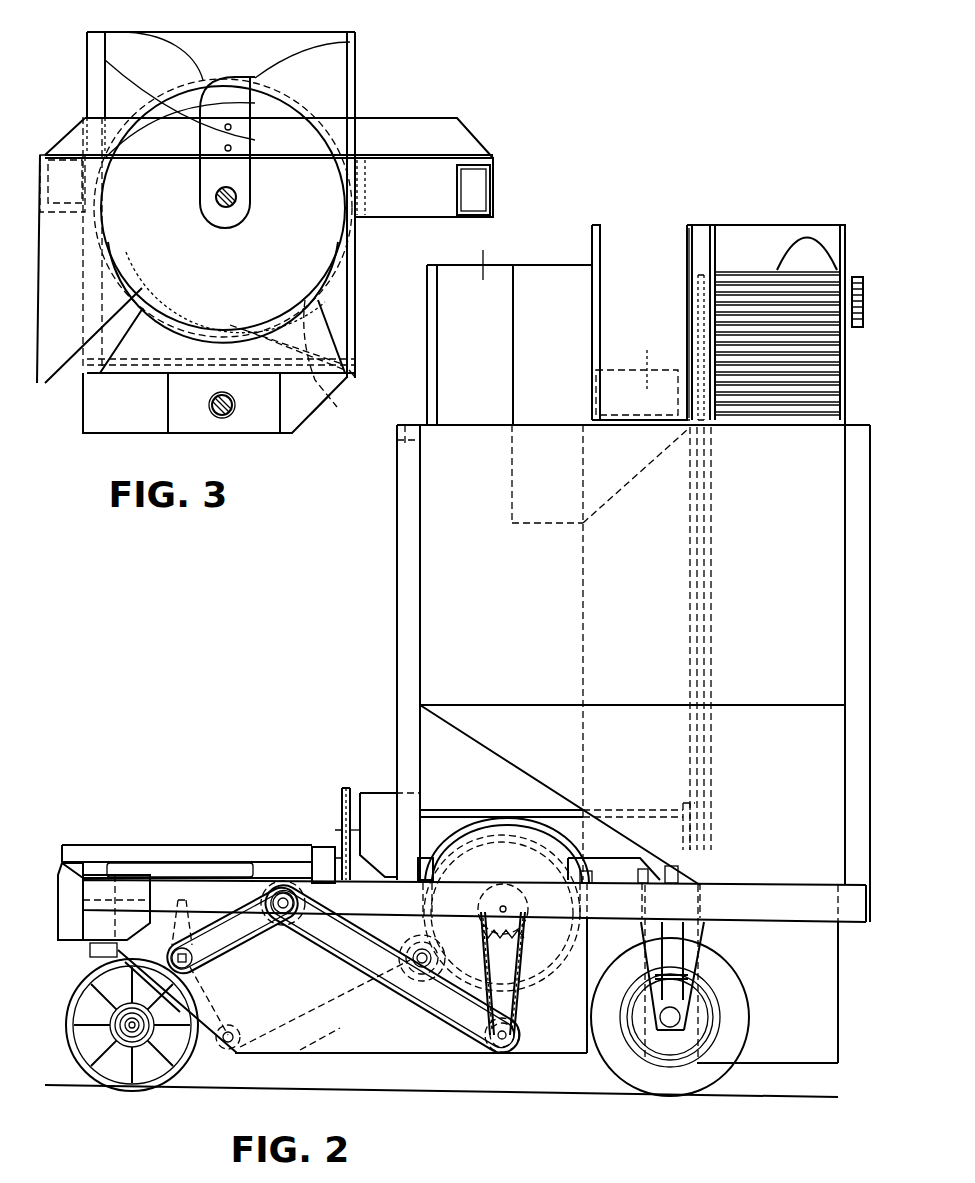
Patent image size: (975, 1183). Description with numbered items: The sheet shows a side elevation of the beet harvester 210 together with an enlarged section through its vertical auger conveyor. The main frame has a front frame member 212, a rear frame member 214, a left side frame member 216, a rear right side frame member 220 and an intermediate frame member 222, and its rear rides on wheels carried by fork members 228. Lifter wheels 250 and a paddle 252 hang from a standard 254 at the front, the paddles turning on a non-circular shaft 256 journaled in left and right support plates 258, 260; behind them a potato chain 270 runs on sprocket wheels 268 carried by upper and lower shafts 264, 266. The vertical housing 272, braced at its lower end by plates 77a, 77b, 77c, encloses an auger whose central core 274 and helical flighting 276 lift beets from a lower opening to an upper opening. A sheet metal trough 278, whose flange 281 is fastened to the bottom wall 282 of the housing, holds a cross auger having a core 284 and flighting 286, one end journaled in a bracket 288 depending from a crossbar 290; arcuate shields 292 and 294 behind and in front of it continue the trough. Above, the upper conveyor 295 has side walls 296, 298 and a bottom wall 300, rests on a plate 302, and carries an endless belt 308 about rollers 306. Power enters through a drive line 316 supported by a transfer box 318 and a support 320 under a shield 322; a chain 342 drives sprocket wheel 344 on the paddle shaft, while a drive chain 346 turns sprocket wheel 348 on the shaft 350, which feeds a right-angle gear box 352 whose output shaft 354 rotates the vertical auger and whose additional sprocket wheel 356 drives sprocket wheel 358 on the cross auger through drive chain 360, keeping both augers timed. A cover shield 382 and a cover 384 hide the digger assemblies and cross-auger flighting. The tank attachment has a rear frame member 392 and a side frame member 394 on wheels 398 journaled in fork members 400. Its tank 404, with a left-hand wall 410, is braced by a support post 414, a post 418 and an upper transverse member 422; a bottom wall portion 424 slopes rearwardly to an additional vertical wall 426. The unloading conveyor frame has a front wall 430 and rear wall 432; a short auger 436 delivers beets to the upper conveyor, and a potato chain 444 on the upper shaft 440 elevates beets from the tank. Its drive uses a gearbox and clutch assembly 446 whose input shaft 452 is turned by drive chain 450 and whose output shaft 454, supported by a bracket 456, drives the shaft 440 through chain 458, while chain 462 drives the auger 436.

In FIG. 3, the plate 77a is at (82, 420).
In FIG. 3, the plate 77b is at (313, 416).
In FIG. 3, the plate 77c is at (355, 358).
In FIG. 2, the beet harvester 210 is at (314, 735).
In FIG. 2, the front frame member 212 is at (80, 946).
In FIG. 3, the rear frame member 214 is at (495, 179).
In FIG. 2, the left side frame member 216 is at (465, 896).
In FIG. 3, the rear right side frame member 220 is at (418, 200).
In FIG. 3, the intermediate frame member 222 is at (47, 177).
In FIG. 2, the fork members 228 is at (662, 931).
In FIG. 2, the lifter wheels 250 is at (72, 1051).
In FIG. 2, the paddle 252 is at (186, 901).
In FIG. 2, the standard 254 is at (95, 956).
In FIG. 2, the non-circular shaft 256 is at (192, 966).
In FIG. 2, the left side support plate 258 is at (385, 1051).
In FIG. 3, the right side support plate 260 is at (55, 378).
In FIG. 2, the upper shaft 264 is at (418, 953).
In FIG. 2, the lower shaft 266 is at (230, 1035).
In FIG. 2, the sprocket wheels 268 is at (235, 1053).
In FIG. 2, the chain 270 is at (358, 1007).
In FIG. 3, the vertical housing 272 is at (357, 78).
In FIG. 2, the vertical housing 272 is at (483, 272).
In FIG. 3, the central core 274 is at (203, 228).
In FIG. 3, the helical flighting 276 is at (300, 230).
In FIG. 3, the sheet metal trough 278 is at (315, 290).
In FIG. 2, the sheet metal trough 278 is at (540, 976).
In FIG. 3, the downwardly depending flange 281 is at (137, 354).
In FIG. 3, the bottom wall 282 is at (325, 390).
In FIG. 3, the core 284 is at (216, 196).
In FIG. 3, the helical flighting 286 is at (148, 110).
In FIG. 2, the helical flighting 286 is at (530, 848).
In FIG. 3, the bracket 288 is at (250, 214).
In FIG. 3, the crossbar 290 is at (420, 140).
In FIG. 2, the crossbar 290 is at (622, 871).
In FIG. 3, the arcuate shield 292 is at (342, 272).
In FIG. 2, the arcuate shield 292 is at (580, 921).
In FIG. 3, the arcuate shield 294 is at (118, 256).
In FIG. 2, the arcuate shield 294 is at (332, 916).
In FIG. 2, the upper conveyor 295 is at (592, 199).
In FIG. 2, the side wall 296 is at (599, 232).
In FIG. 2, the side wall 298 is at (687, 259).
In FIG. 2, the bottom wall 300 is at (640, 423).
In FIG. 2, the plate 302 is at (520, 358).
In FIG. 2, the rollers 306 is at (650, 385).
In FIG. 2, the endless belt 308 is at (612, 368).
In FIG. 2, the drive line 316 is at (340, 836).
In FIG. 2, the transfer box 318 is at (316, 856).
In FIG. 2, the support 320 is at (62, 871).
In FIG. 2, the shield 322 is at (198, 850).
In FIG. 2, the chain 342 is at (250, 941).
In FIG. 2, the sprocket wheel 344 is at (205, 954).
In FIG. 2, the drive chain 346 is at (425, 1011).
In FIG. 2, the sprocket wheel 348 is at (480, 1041).
In FIG. 3, the shaft 350 is at (211, 406).
In FIG. 2, the shaft 350 is at (520, 1036).
In FIG. 3, the right-angle gear box 352 is at (262, 426).
In FIG. 3, the output shaft 354 is at (230, 384).
In FIG. 2, the additional sprocket wheel 356 is at (516, 1024).
In FIG. 2, the sprocket wheel 358 is at (522, 916).
In FIG. 2, the drive chain 360 is at (512, 968).
In FIG. 2, the cover shield 382 is at (147, 862).
In FIG. 2, the cover 384 is at (475, 841).
In FIG. 2, the rear frame member 392 is at (845, 921).
In FIG. 2, the side frame member 394 is at (808, 915).
In FIG. 2, the wheels 398 is at (718, 1071).
In FIG. 2, the fork members 400 is at (700, 936).
In FIG. 2, the tank 404 is at (377, 557).
In FIG. 2, the left-hand wall 410 is at (614, 618).
In FIG. 2, the support post 414 is at (855, 426).
In FIG. 2, the post 418 is at (397, 506).
In FIG. 2, the upper transverse member 422 is at (400, 434).
In FIG. 2, the bottom wall portion 424 is at (495, 753).
In FIG. 2, the additional vertical wall 426 is at (738, 806).
In FIG. 2, the front wall 430 is at (715, 232).
In FIG. 2, the rear wall 432 is at (845, 233).
In FIG. 2, the short auger 436 is at (803, 233).
In FIG. 2, the upper shaft 440 is at (703, 300).
In FIG. 2, the potato chain 444 is at (830, 360).
In FIG. 2, the combined reduction gearbox and electric clutch assembly 446 is at (377, 795).
In FIG. 2, the drive chain 450 is at (342, 821).
In FIG. 2, the input shaft 452 is at (362, 791).
In FIG. 2, the output shaft 454 is at (495, 808).
In FIG. 2, the bracket 456 is at (683, 804).
In FIG. 2, the chain 458 is at (688, 528).
In FIG. 2, the chain 462 is at (863, 281).